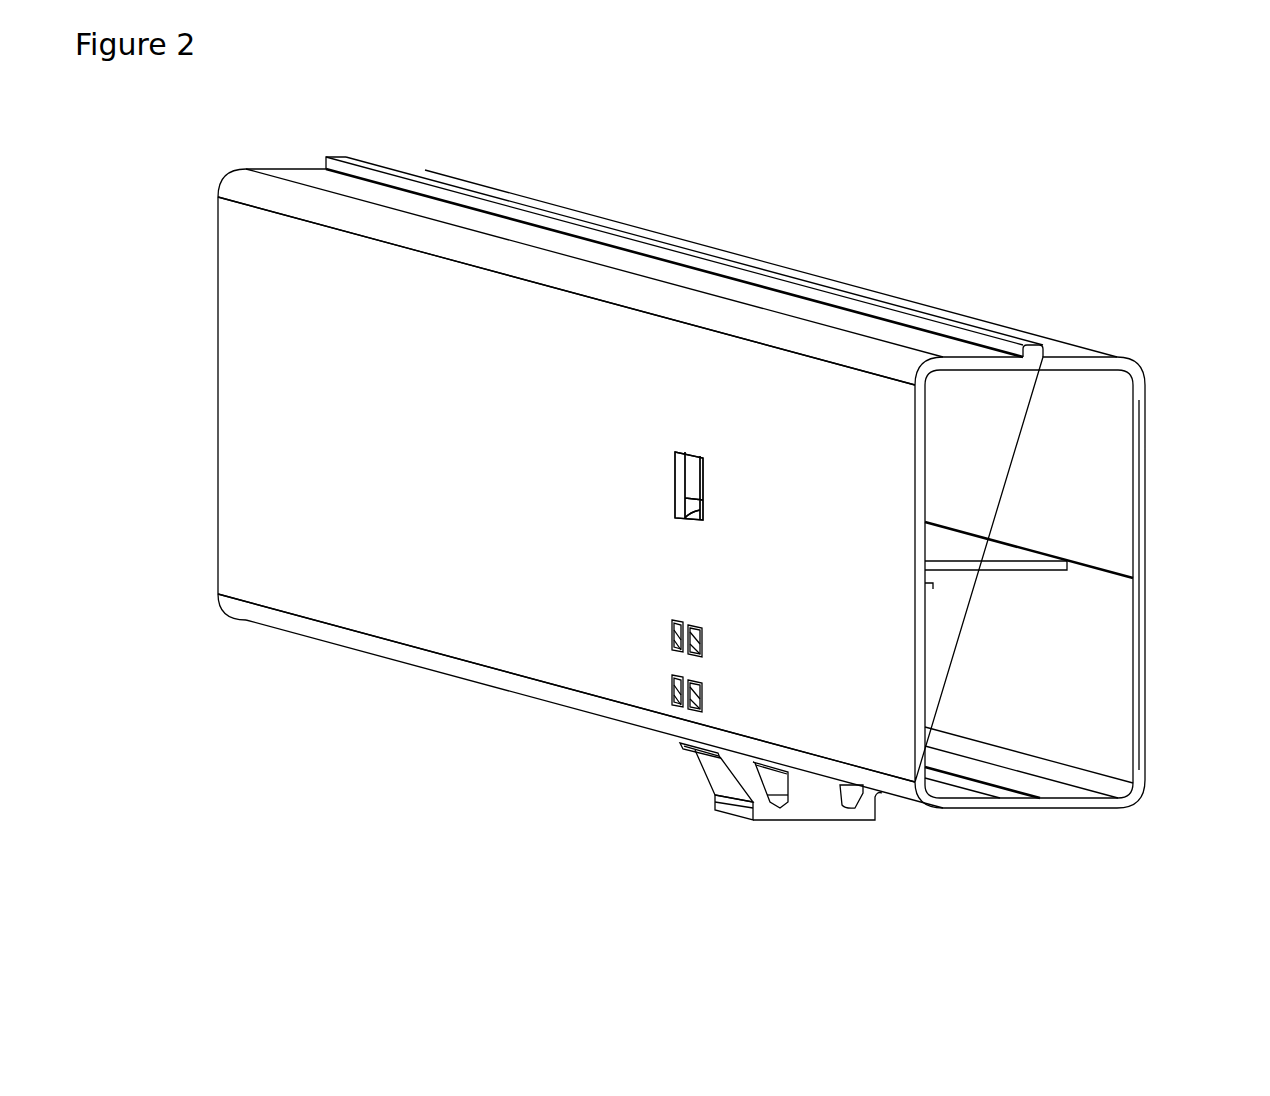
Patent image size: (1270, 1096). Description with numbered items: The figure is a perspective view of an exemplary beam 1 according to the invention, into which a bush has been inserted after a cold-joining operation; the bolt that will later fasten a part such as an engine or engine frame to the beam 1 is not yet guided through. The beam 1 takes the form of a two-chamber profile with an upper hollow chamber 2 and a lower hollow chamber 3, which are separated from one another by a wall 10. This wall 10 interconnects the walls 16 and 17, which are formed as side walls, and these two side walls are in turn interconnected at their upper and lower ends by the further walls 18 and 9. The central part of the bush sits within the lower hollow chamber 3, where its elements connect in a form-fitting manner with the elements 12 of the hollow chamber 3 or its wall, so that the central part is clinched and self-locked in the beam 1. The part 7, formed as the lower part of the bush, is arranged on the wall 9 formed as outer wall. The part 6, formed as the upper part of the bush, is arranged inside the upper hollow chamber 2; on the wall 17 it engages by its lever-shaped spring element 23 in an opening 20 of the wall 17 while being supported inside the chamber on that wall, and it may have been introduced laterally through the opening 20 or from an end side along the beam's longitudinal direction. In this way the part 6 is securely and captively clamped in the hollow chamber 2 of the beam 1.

The beam 1 is at (958, 176).
The upper hollow chamber 2 is at (1082, 520).
The lower hollow chamber 3 is at (1035, 690).
The part of the bush formed as upper part 6 is at (695, 478).
The part of the bush formed as lower part 7 is at (797, 798).
The wall formed as outer wall 9 is at (1052, 798).
The wall 10 is at (967, 560).
The elements of the hollow chamber 12 is at (708, 618).
The wall formed as side wall 16 is at (1135, 468).
The wall formed as side wall 17 is at (390, 510).
The further wall 18 is at (1055, 355).
The opening 20 is at (655, 514).
The lever-shaped spring element 23 is at (689, 486).